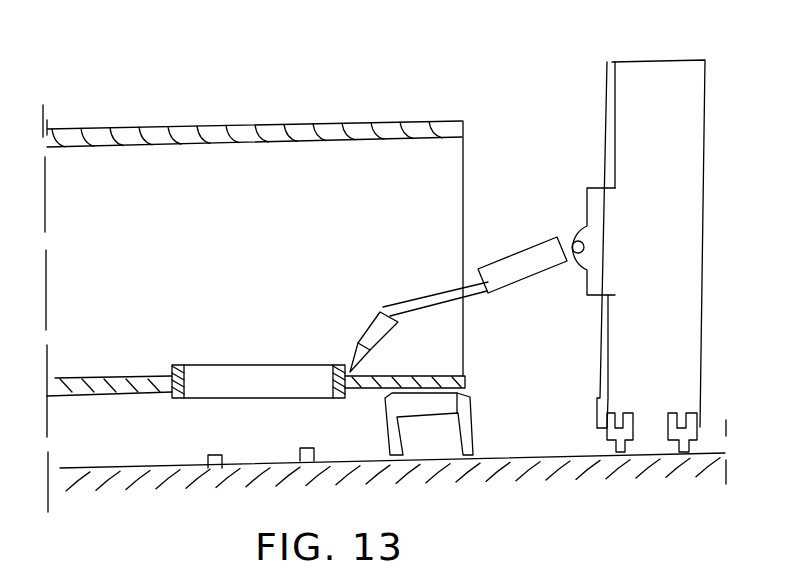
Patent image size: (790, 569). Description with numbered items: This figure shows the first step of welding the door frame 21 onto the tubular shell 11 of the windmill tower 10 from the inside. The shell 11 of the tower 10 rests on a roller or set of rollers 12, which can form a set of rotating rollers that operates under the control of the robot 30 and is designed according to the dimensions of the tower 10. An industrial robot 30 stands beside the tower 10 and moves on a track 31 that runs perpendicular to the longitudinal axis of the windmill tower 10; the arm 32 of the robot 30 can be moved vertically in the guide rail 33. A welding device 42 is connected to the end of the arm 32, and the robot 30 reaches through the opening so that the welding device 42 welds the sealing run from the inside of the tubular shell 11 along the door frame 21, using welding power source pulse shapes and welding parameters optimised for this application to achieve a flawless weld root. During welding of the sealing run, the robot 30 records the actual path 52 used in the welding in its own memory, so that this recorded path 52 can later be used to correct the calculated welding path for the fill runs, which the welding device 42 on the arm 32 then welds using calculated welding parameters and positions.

The tower 10 is at (207, 110).
The shell 11 is at (302, 120).
The roller or set of rollers 12 is at (423, 402).
The door frame 21 is at (196, 363).
The robot 30 is at (653, 41).
The track 31 is at (612, 450).
The arm 32 is at (506, 258).
The guide rail 33 is at (600, 137).
The welding device 42 is at (365, 322).
The path 52 is at (210, 450).